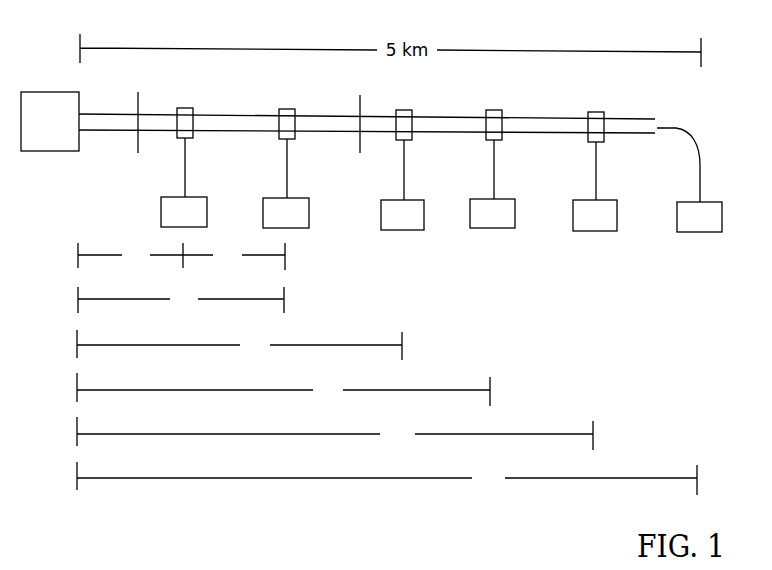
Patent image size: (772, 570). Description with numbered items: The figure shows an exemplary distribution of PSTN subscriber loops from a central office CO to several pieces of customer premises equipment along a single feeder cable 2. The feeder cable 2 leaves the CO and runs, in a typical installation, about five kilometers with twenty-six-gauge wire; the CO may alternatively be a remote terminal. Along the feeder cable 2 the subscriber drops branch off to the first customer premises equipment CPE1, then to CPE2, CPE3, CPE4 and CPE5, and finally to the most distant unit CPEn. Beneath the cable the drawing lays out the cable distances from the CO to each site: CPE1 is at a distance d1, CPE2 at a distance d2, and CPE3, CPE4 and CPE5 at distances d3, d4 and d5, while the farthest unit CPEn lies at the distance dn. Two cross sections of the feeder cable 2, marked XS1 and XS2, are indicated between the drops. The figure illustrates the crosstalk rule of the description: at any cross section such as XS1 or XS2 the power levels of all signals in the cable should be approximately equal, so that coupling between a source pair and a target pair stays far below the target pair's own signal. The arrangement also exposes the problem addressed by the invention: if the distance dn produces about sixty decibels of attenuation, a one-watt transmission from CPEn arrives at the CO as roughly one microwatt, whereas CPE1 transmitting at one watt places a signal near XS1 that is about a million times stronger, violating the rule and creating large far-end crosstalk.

The feeder cable 2 is at (219, 123).
The central office CO is at (50, 121).
The first cross section XS1 is at (139, 139).
The second cross section XS2 is at (359, 141).
The first customer premises equipment CPE1 is at (184, 167).
The second customer premises equipment CPE2 is at (286, 168).
The third customer premises equipment CPE3 is at (402, 170).
The fourth customer premises equipment CPE4 is at (492, 169).
The fifth customer premises equipment CPE5 is at (595, 171).
The nth customer premises equipment CPEn is at (699, 217).
The distance from CO to CPE1 d1 is at (181, 256).
The distance from CO to CPE2 d2 is at (181, 300).
The distance from CO to CPE3 d3 is at (239, 345).
The distance from CO to CPE4 d4 is at (283, 389).
The distance from CO to CPE5 d5 is at (335, 433).
The distance from CO to CPEn dn is at (387, 478).